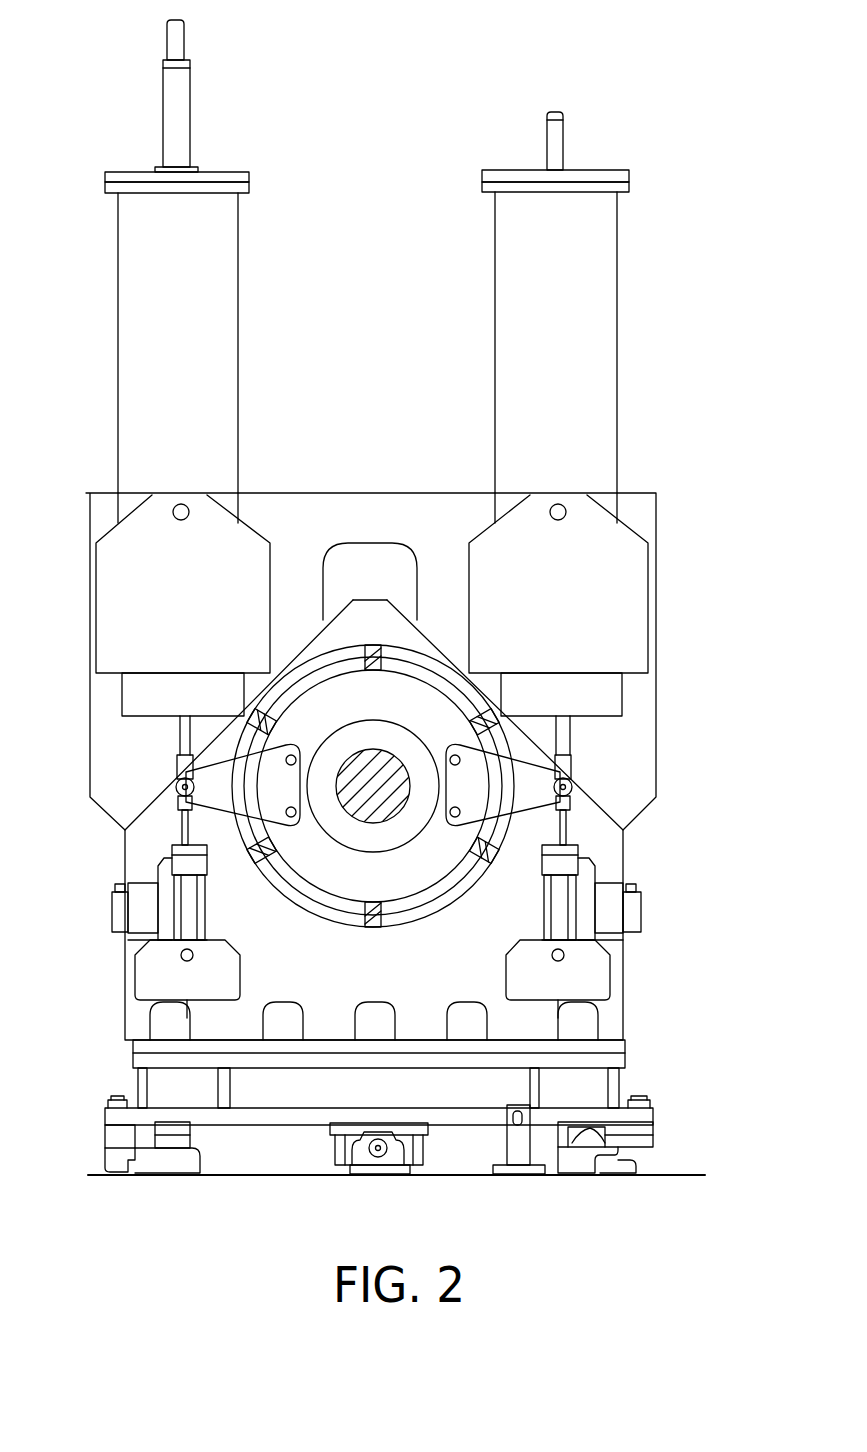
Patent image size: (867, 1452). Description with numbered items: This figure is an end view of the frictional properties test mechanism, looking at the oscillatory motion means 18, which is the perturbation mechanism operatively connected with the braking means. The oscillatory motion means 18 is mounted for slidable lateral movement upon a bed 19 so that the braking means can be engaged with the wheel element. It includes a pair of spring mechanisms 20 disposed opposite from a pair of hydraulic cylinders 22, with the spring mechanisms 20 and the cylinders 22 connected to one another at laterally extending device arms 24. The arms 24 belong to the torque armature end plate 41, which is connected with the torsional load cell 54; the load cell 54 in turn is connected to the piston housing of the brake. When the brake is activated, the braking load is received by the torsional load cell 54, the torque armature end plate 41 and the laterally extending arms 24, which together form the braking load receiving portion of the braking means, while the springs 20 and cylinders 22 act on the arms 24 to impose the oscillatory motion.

The oscillatory motion means 18 is at (668, 276).
The bed 19 is at (627, 1048).
The spring mechanisms 20 is at (239, 385).
The hydraulic cylinders 22 is at (165, 870).
The laterally extending device arms 24 is at (215, 765).
The torque armature end plate 41 is at (428, 883).
The torsional load cell 54 is at (357, 812).